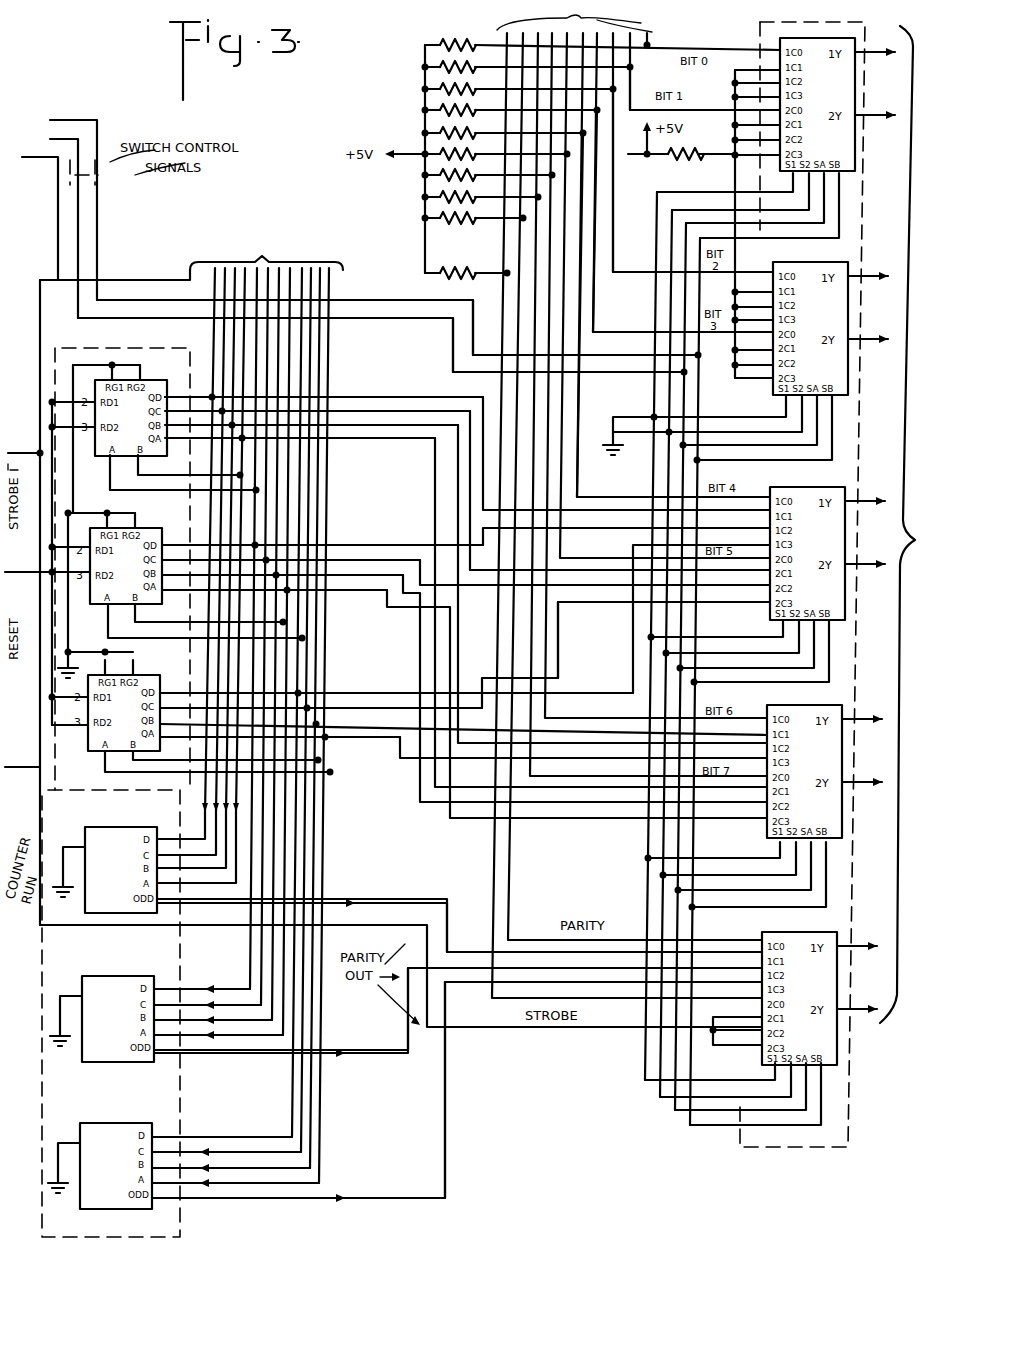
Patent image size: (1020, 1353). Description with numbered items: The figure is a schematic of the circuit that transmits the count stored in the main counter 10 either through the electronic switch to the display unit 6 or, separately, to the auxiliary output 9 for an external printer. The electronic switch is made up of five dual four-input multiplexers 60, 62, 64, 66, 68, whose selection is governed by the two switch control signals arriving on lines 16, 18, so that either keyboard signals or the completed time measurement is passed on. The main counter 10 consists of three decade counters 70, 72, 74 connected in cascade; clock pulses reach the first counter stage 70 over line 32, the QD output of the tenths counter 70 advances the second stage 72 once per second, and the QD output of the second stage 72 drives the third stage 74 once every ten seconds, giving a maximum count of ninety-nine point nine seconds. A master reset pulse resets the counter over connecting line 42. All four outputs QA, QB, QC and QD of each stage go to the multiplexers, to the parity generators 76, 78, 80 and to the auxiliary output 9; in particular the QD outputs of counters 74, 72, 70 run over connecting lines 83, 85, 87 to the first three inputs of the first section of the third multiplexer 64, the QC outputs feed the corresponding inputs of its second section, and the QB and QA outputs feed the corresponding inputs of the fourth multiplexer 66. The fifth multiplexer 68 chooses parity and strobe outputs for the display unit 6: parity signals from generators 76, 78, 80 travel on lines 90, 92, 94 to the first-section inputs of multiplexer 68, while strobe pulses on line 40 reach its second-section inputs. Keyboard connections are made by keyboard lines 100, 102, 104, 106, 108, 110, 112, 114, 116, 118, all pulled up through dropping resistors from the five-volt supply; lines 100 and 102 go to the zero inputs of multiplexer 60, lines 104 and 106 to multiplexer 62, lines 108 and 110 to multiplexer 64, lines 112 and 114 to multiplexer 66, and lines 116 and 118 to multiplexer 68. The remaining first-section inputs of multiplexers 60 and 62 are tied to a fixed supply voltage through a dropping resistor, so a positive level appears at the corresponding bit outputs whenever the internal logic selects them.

The display unit 6 is at (884, 524).
The auxiliary output 9 is at (266, 694).
The main counter 10 is at (408, 559).
The line 16 is at (436, 302).
The line 18 is at (439, 338).
The line 32 is at (18, 762).
The line 40 is at (158, 278).
The connecting line 42 is at (22, 565).
The dual 4-input multiplexer 60 is at (780, 38).
The dual 4-input multiplexer 62 is at (845, 366).
The dual 4-input multiplexer 64 is at (835, 490).
The dual 4-input multiplexer 66 is at (832, 822).
The dual 4-input multiplexer 68 is at (832, 1038).
The decade counter 70 is at (152, 679).
The decade counter 72 is at (154, 532).
The decade counter 74 is at (154, 384).
The parity generator 76 is at (145, 826).
The parity generator 78 is at (143, 976).
The parity generator 80 is at (142, 1122).
The connecting line 83 is at (384, 399).
The connecting line 85 is at (371, 542).
The connecting line 87 is at (366, 689).
The line 90 is at (373, 901).
The line 92 is at (385, 935).
The line 94 is at (395, 1196).
The keyboard line 100 is at (650, 36).
The keyboard line 102 is at (632, 78).
The keyboard line 104 is at (615, 180).
The keyboard line 106 is at (624, 332).
The keyboard line 108 is at (614, 499).
The keyboard line 110 is at (500, 18).
The keyboard line 112 is at (560, 640).
The keyboard line 114 is at (500, 34).
The keyboard line 116 is at (511, 877).
The keyboard line 118 is at (494, 877).